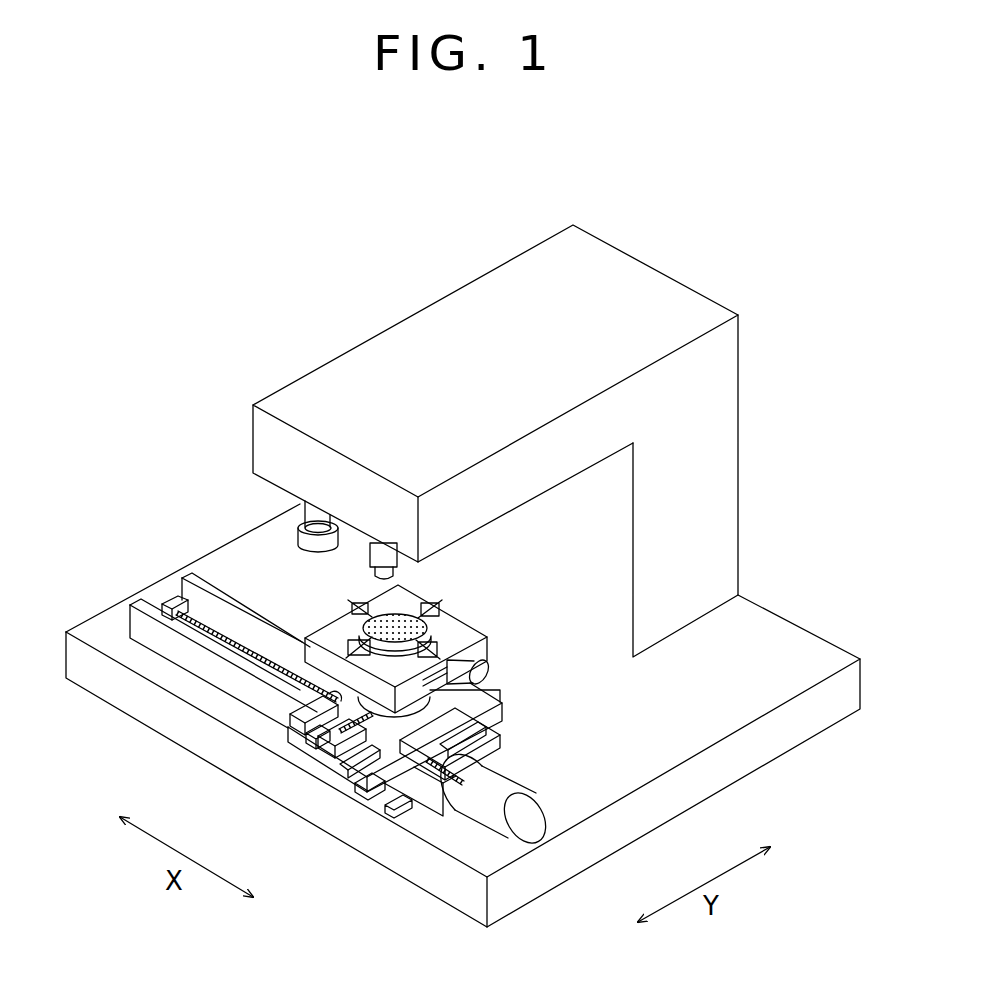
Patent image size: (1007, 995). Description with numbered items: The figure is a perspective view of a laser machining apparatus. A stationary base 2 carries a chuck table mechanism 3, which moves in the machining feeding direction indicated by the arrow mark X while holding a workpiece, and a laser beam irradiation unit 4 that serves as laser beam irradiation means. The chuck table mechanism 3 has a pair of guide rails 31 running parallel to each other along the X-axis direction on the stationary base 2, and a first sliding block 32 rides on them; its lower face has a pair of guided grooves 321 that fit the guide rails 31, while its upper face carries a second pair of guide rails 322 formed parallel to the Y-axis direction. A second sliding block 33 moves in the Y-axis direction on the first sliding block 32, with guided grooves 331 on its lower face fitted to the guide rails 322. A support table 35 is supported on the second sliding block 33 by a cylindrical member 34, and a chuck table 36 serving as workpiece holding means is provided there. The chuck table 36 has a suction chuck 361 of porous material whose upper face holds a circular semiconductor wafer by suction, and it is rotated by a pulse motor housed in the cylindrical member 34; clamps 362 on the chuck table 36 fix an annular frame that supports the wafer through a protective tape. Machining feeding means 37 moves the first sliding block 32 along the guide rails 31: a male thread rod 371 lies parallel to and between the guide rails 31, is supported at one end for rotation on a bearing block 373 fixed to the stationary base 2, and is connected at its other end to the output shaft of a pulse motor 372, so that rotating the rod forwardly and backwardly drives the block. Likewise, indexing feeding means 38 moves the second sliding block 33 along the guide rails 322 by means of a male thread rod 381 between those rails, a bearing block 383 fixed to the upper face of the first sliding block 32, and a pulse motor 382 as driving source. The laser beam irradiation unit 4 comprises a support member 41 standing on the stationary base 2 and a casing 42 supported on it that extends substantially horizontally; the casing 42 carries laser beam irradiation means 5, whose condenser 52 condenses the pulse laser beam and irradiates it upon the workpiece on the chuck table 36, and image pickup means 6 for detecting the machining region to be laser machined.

The stationary base 2 is at (806, 628).
The chuck table mechanism 3 is at (404, 729).
The laser beam irradiation unit 4 is at (540, 423).
The laser beam irradiation means 5 is at (275, 514).
The image pickup means 6 is at (364, 552).
The guide rails 31 is at (182, 580).
The first sliding block 32 is at (375, 809).
The second sliding block 33 is at (330, 803).
The cylindrical member 34 is at (417, 703).
The support table 35 is at (460, 628).
The chuck table 36 is at (413, 611).
The machining feeding means 37 is at (342, 729).
The indexing feeding means 38 is at (367, 745).
The support member 41 is at (745, 466).
The casing 42 is at (462, 290).
The condenser 52 is at (302, 540).
The guided grooves 321 is at (477, 730).
The guide rails 322 is at (293, 727).
The guided grooves 331 is at (307, 695).
The suction chuck 361 is at (423, 607).
The clamps 362 is at (362, 604).
The male thread rod 371 is at (222, 642).
The pulse motor 372 is at (527, 815).
The bearing block 373 is at (168, 600).
The male thread rod 381 is at (317, 727).
The pulse motor 382 is at (470, 675).
The bearing block 383 is at (317, 737).